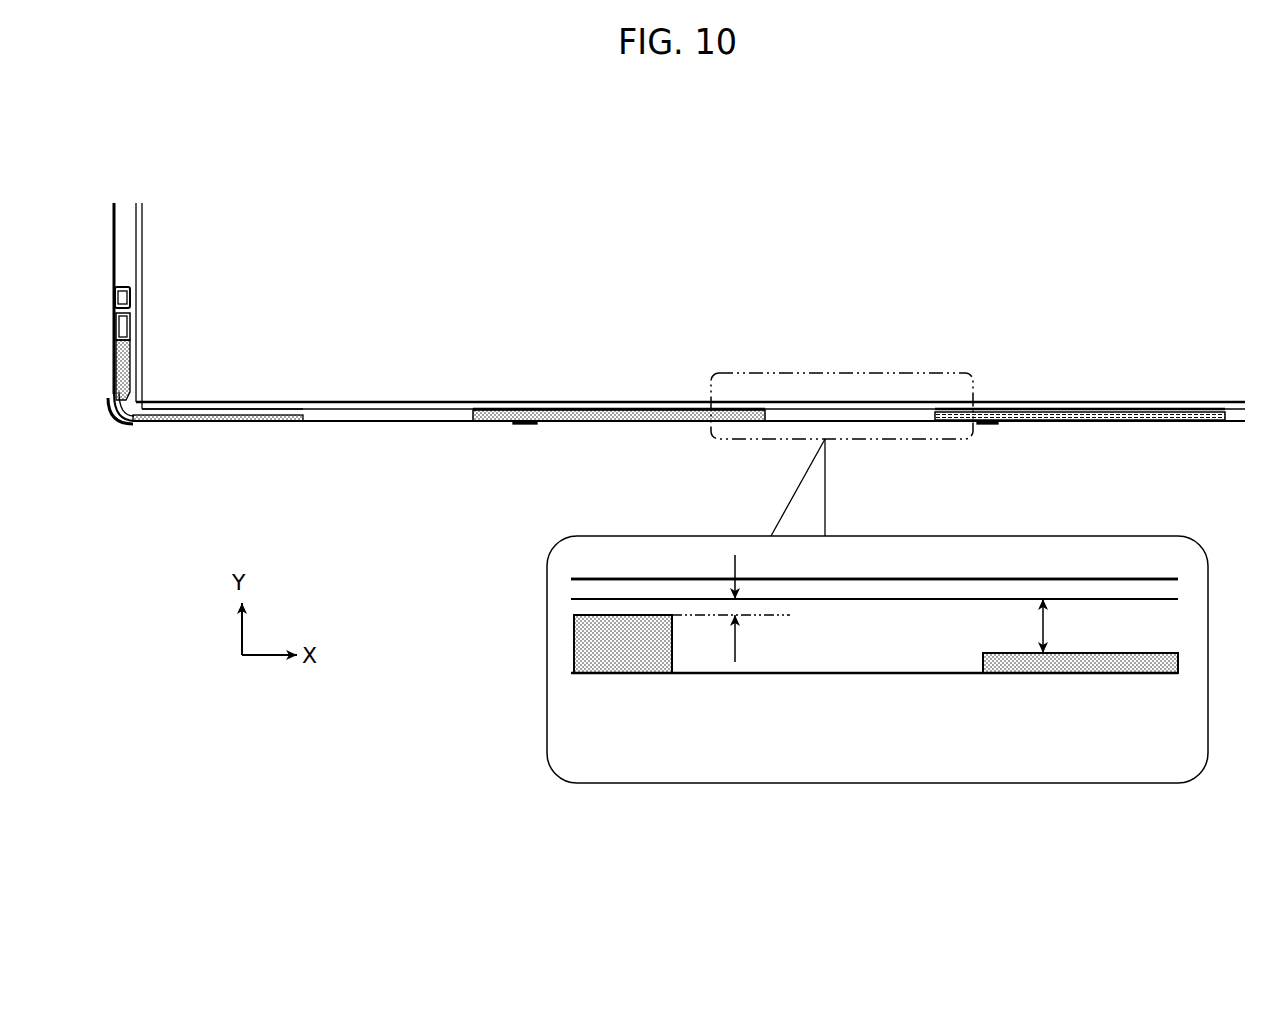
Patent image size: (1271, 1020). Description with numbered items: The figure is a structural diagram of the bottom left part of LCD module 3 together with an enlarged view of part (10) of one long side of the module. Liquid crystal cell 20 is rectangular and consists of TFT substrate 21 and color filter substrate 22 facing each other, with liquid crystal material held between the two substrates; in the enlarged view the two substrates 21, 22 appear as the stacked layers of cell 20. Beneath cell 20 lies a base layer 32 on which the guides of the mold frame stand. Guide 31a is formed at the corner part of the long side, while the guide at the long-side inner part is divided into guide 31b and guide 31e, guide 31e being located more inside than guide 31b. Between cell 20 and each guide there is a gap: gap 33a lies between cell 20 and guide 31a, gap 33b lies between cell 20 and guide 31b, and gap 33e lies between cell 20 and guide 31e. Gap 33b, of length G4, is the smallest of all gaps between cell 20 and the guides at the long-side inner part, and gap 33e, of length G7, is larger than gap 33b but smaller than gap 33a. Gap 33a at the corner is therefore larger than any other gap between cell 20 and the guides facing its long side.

The LCD module 3 is at (392, 285).
The part 10 is at (880, 345).
The liquid crystal cell 20 is at (362, 402).
The TFT substrate 21 is at (582, 592).
The color filter substrate 22 is at (582, 552).
The guide 31a is at (160, 421).
The guide 31b is at (555, 415).
The guide 31e is at (1057, 420).
The base plate 32 is at (395, 413).
The gap 33a is at (197, 410).
The gap 33b is at (527, 403).
The gap 33e is at (1012, 407).
The gap length G4 is at (731, 608).
The gap length G7 is at (1022, 626).